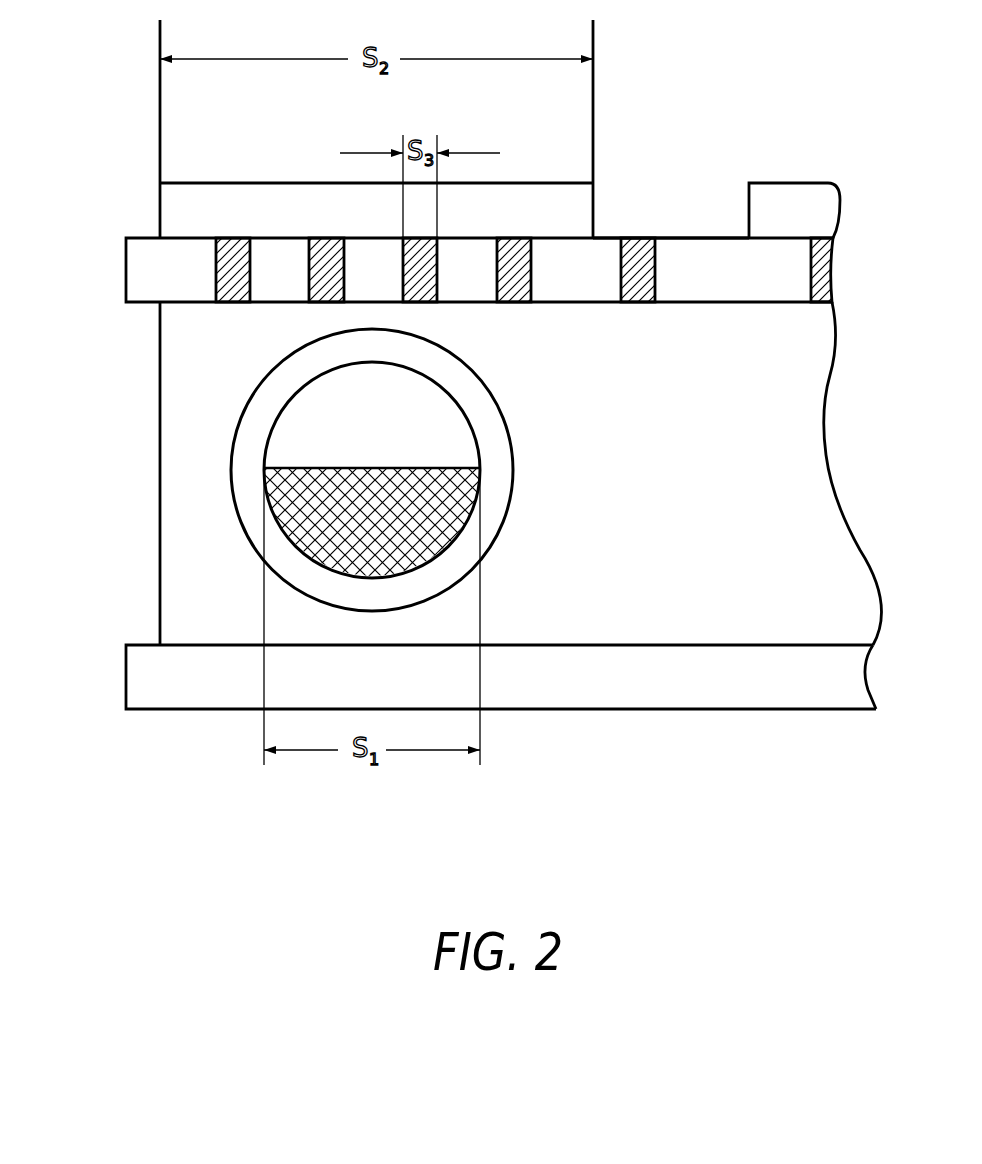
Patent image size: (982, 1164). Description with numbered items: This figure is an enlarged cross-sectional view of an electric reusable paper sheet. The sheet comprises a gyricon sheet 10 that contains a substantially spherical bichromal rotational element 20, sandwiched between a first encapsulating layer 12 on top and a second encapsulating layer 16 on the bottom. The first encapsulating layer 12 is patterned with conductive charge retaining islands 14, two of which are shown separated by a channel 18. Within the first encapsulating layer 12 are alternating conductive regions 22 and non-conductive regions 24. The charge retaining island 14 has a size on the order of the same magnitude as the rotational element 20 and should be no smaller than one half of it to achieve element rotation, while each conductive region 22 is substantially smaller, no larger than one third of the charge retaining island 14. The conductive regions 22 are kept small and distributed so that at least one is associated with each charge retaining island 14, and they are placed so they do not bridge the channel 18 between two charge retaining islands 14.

The gyricon sheet 10 is at (180, 535).
The first encapsulating layer 12 is at (125, 270).
The charge retaining island 14 is at (158, 208).
The second encapsulating layer 16 is at (178, 697).
The channel 18 is at (692, 237).
The bichromal element 20 is at (442, 427).
The conductive region 22 is at (230, 290).
The non-conductive region 24 is at (150, 283).